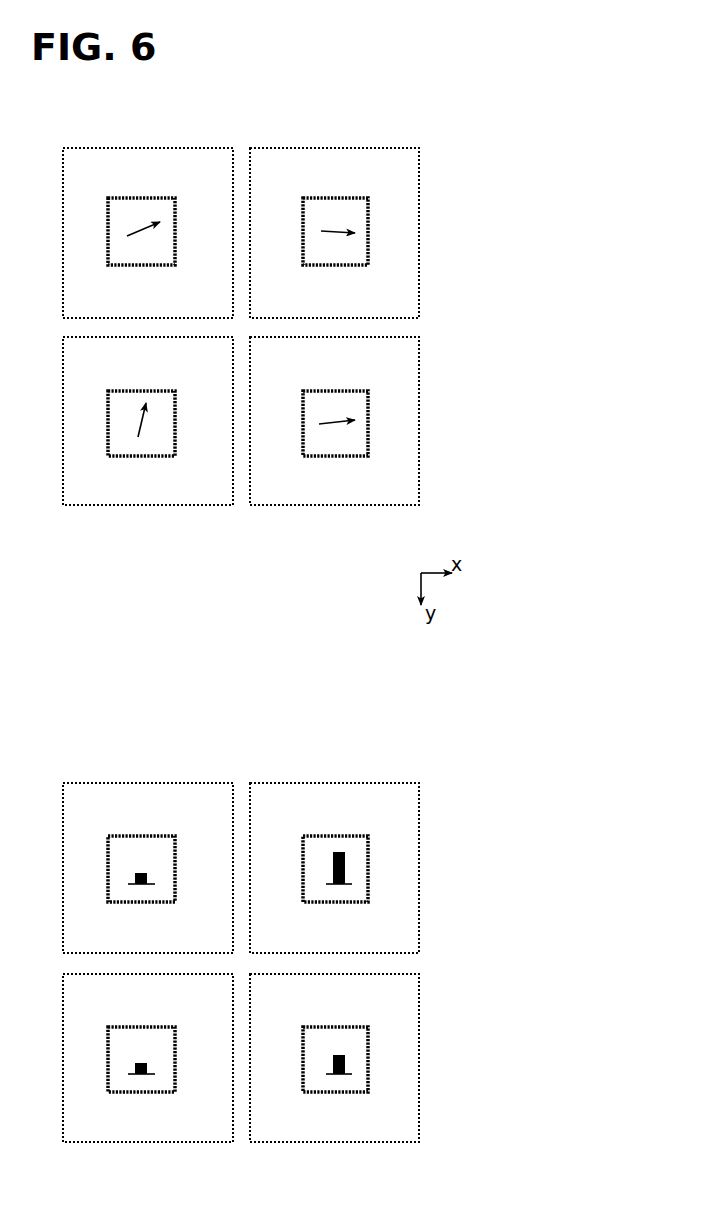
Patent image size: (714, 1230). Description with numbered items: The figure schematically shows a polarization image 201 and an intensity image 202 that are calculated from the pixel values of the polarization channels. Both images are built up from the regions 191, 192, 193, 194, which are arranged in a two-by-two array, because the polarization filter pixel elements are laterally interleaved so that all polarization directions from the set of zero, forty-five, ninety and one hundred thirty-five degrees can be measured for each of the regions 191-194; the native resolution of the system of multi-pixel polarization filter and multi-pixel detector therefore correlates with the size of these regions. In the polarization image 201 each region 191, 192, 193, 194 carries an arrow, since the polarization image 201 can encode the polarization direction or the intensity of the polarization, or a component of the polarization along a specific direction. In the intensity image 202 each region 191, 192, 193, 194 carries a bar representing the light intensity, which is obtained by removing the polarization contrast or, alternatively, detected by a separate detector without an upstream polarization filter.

The region 191 is at (65, 146).
The region 192 is at (410, 146).
The region 193 is at (73, 507).
The region 194 is at (420, 373).
The polarization image 201 is at (531, 163).
The intensity image 202 is at (531, 799).